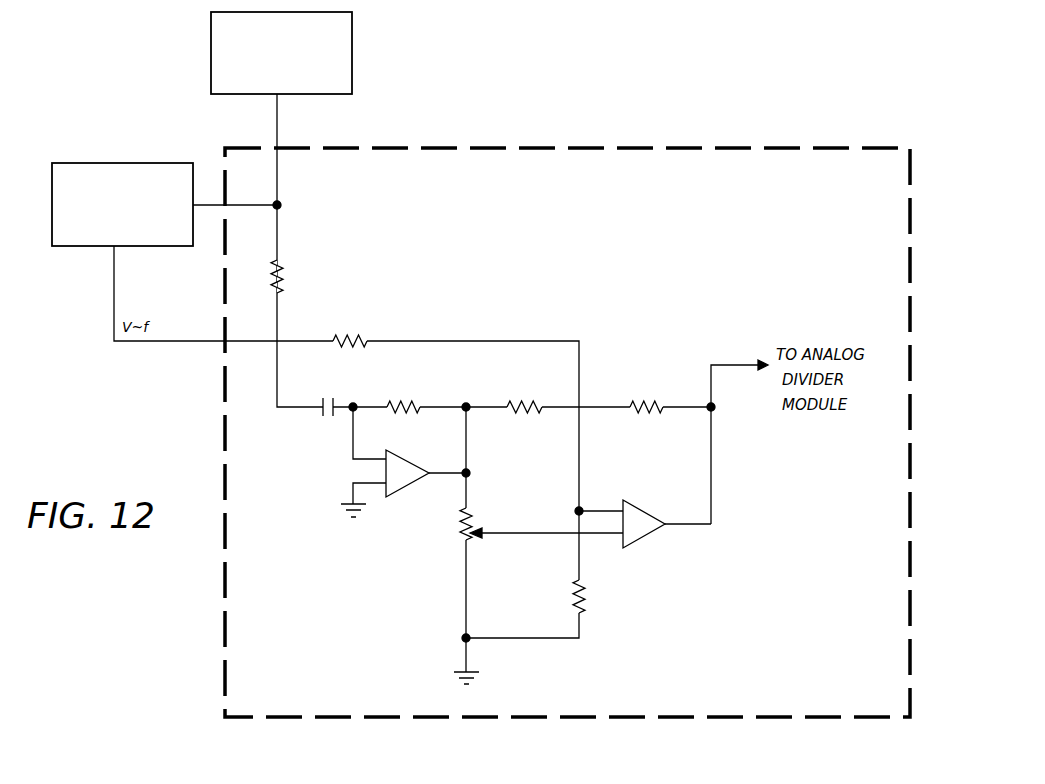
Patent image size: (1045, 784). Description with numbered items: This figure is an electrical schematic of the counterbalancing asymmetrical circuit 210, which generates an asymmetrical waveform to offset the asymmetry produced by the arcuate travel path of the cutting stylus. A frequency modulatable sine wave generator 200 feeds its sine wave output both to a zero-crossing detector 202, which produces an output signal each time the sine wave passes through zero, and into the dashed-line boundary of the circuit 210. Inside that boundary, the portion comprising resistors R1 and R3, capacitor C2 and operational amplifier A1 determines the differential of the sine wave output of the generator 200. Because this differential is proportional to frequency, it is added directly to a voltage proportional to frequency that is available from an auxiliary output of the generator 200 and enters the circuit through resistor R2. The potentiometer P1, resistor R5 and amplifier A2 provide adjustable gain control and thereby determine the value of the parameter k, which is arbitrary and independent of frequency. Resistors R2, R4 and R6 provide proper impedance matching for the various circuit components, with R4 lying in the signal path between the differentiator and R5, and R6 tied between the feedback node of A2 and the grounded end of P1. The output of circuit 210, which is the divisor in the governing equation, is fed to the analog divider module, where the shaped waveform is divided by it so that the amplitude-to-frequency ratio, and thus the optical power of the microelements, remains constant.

The sine wave generator 200 is at (118, 163).
The zero-crossing detector 202 is at (352, 45).
The asymmetrical waveform circuit 210 is at (616, 142).
The resistor R1 is at (291, 276).
The resistor R2 is at (350, 332).
The resistor R3 is at (403, 398).
The resistor R4 is at (524, 398).
The resistor R5 is at (646, 397).
The resistor R6 is at (594, 596).
The capacitor C2 is at (331, 399).
The operational amplifier A1 is at (405, 462).
The amplifier A2 is at (643, 524).
The potentiometer P1 is at (541, 524).